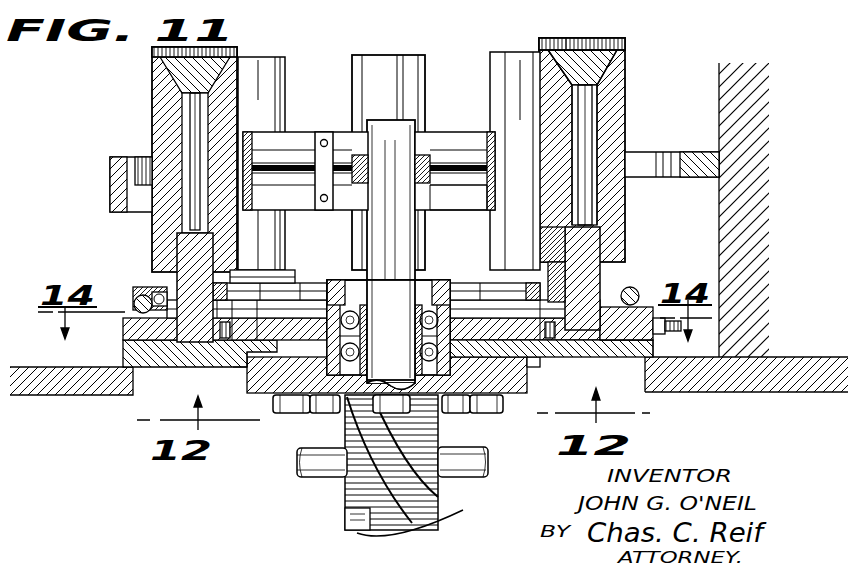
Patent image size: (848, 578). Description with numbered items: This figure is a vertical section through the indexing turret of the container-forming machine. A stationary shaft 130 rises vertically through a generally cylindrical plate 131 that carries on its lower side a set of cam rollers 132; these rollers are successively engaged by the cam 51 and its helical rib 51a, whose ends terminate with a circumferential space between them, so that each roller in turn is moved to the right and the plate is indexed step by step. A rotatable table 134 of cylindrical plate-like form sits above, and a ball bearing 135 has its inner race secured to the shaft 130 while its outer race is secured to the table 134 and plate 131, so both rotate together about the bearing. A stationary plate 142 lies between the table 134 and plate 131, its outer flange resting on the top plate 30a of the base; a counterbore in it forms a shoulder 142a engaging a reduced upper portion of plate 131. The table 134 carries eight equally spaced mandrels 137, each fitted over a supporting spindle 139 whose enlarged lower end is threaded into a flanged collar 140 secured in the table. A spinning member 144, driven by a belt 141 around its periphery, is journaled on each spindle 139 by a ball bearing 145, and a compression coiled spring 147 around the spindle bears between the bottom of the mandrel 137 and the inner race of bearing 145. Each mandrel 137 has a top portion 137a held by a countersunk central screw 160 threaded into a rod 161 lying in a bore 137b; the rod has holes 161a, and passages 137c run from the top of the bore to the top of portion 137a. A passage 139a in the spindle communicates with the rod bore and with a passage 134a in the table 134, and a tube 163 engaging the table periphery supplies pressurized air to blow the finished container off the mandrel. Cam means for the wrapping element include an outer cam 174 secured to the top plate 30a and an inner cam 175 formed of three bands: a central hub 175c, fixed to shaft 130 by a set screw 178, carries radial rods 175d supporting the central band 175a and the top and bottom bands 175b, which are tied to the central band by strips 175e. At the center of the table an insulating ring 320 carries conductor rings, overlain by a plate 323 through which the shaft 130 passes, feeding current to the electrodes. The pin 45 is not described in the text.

The mandrel 137 is at (158, 101).
The top portion of mandrel 137a is at (622, 56).
The bore in mandrel 137b is at (572, 118).
The passages 137c is at (579, 52).
The countersunk central screw 160 is at (587, 58).
The rod 161 is at (588, 107).
The holes 161a is at (583, 215).
The outer cam 174 is at (130, 157).
The inner cam 175 is at (248, 130).
The central band 175a is at (488, 168).
The top and bottom bands 175b is at (483, 135).
The central hub 175c is at (446, 205).
The rods 175d is at (308, 192).
The strips 175e is at (324, 140).
The set screw 178 is at (413, 185).
The supporting spindle 139 is at (593, 242).
The passage 139a is at (578, 262).
The rotatable table 134 is at (643, 307).
The passage in table 134a is at (655, 383).
The spinning member 144 is at (145, 293).
The belt 141 is at (133, 307).
The ball bearing 145 is at (157, 298).
The flanged collar 140 is at (125, 323).
The top plate 30a is at (88, 367).
The stationary plate 142 is at (167, 370).
The shoulder 142a is at (236, 367).
The cylindrical plate 131 is at (527, 378).
The ring of insulating material 320 is at (362, 280).
The stationary shaft 130 is at (347, 281).
The compression coiled spring 147 is at (372, 283).
The plate 323 is at (442, 277).
The ball bearing 135 is at (453, 300).
The tube 163 is at (670, 332).
The cam rollers 132 is at (318, 416).
The pin 45 is at (488, 465).
The cam 51 is at (345, 482).
The helical rib 51a is at (413, 485).